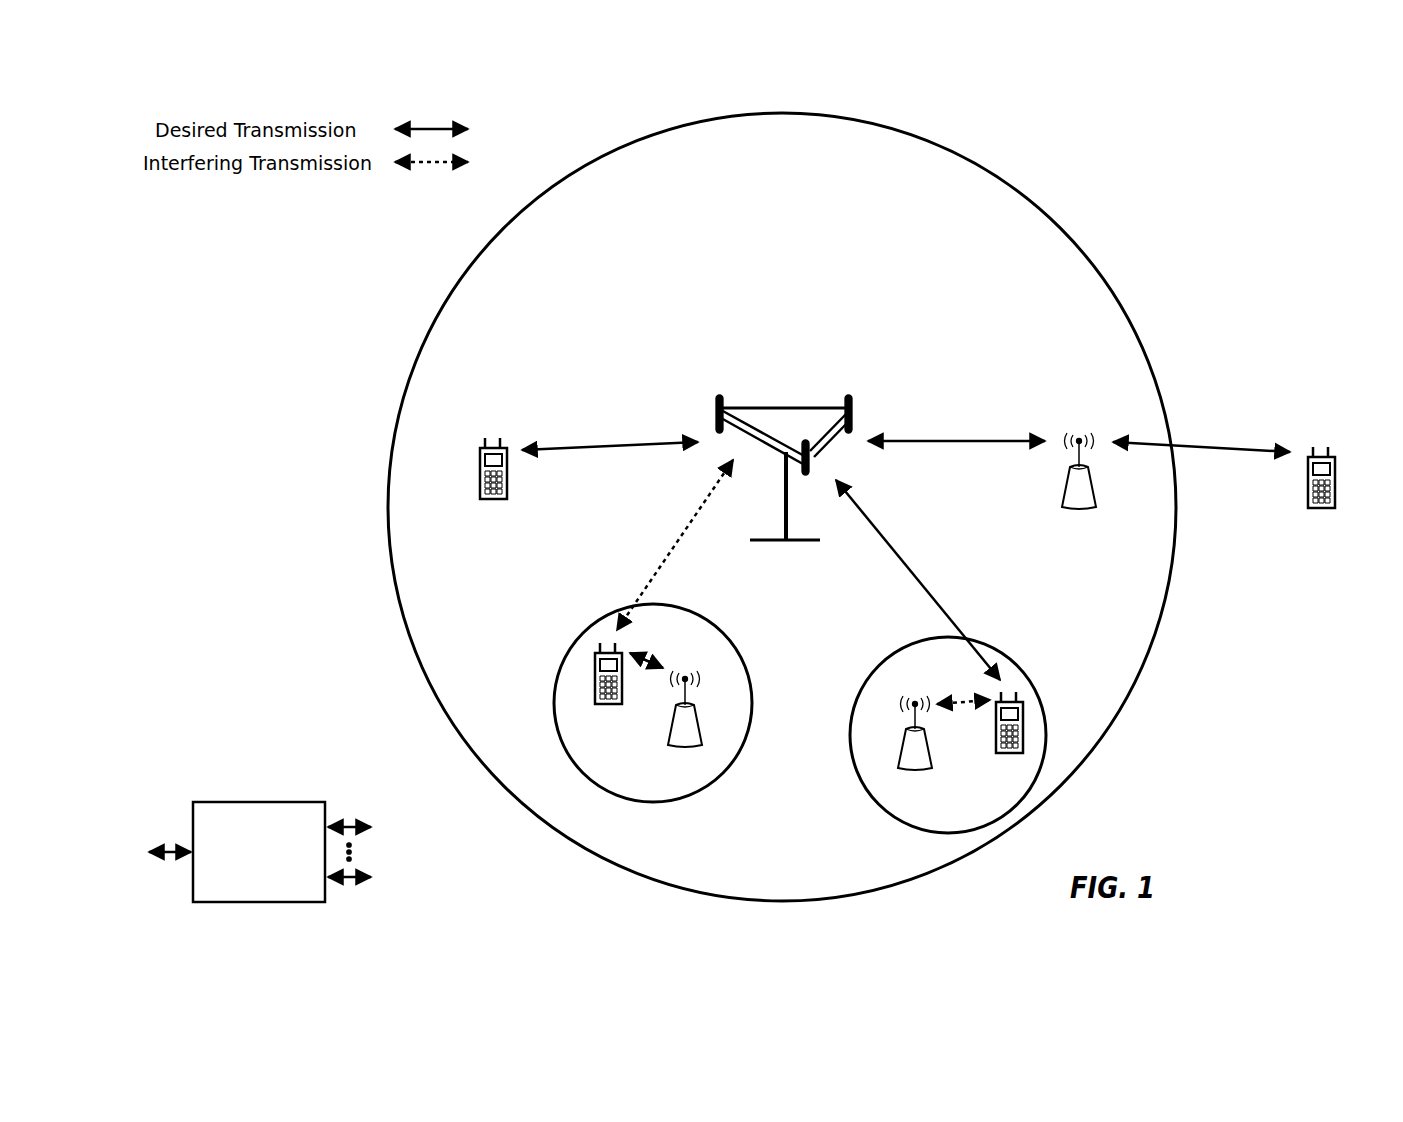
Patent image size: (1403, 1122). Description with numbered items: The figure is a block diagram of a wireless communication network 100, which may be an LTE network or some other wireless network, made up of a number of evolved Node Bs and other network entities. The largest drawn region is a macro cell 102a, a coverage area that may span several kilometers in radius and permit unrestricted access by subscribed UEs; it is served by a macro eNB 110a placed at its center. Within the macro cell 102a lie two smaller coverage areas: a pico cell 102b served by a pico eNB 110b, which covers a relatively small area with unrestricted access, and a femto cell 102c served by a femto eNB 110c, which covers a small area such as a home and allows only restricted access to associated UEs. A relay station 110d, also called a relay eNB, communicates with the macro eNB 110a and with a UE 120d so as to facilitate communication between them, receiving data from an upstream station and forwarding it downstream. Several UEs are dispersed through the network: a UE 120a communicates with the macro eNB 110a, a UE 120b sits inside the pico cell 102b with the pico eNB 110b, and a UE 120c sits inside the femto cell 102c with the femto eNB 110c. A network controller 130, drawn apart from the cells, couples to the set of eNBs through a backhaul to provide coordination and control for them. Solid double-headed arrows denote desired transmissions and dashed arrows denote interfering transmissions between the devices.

The wireless communication network 100 is at (1249, 176).
The macro cell 102a is at (1057, 198).
The pico cell 102b is at (740, 626).
The femto cell 102c is at (872, 671).
The macro eNB 110a is at (780, 408).
The pico eNB 110b is at (712, 716).
The femto eNB 110c is at (896, 751).
The relay station 110d is at (1080, 439).
The UE 120a is at (480, 457).
The UE 120b is at (595, 698).
The UE 120c is at (996, 747).
The UE 120d is at (1335, 465).
The network controller 130 is at (256, 802).